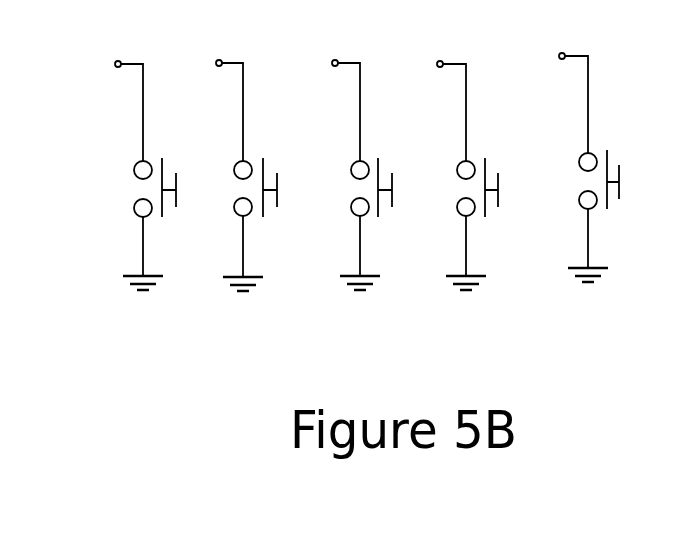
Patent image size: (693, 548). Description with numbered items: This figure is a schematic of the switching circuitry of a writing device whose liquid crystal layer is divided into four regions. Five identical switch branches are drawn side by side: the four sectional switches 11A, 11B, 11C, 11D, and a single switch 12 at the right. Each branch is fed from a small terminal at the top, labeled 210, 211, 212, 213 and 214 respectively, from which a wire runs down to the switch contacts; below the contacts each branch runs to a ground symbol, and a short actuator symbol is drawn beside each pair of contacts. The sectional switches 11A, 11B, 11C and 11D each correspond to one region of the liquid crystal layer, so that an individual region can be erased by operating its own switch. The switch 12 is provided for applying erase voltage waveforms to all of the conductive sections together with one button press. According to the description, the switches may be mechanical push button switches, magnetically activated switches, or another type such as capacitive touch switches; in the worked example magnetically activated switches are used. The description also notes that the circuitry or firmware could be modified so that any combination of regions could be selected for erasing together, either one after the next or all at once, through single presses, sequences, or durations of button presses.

The sectional switch 11A is at (121, 169).
The sectional switch 11B is at (222, 169).
The sectional switch 11C is at (337, 169).
The sectional switch 11D is at (443, 169).
The switch 12 is at (564, 161).
The terminal 210 is at (104, 104).
The terminal 211 is at (205, 104).
The terminal 212 is at (321, 104).
The terminal 213 is at (427, 104).
The terminal 214 is at (549, 96).